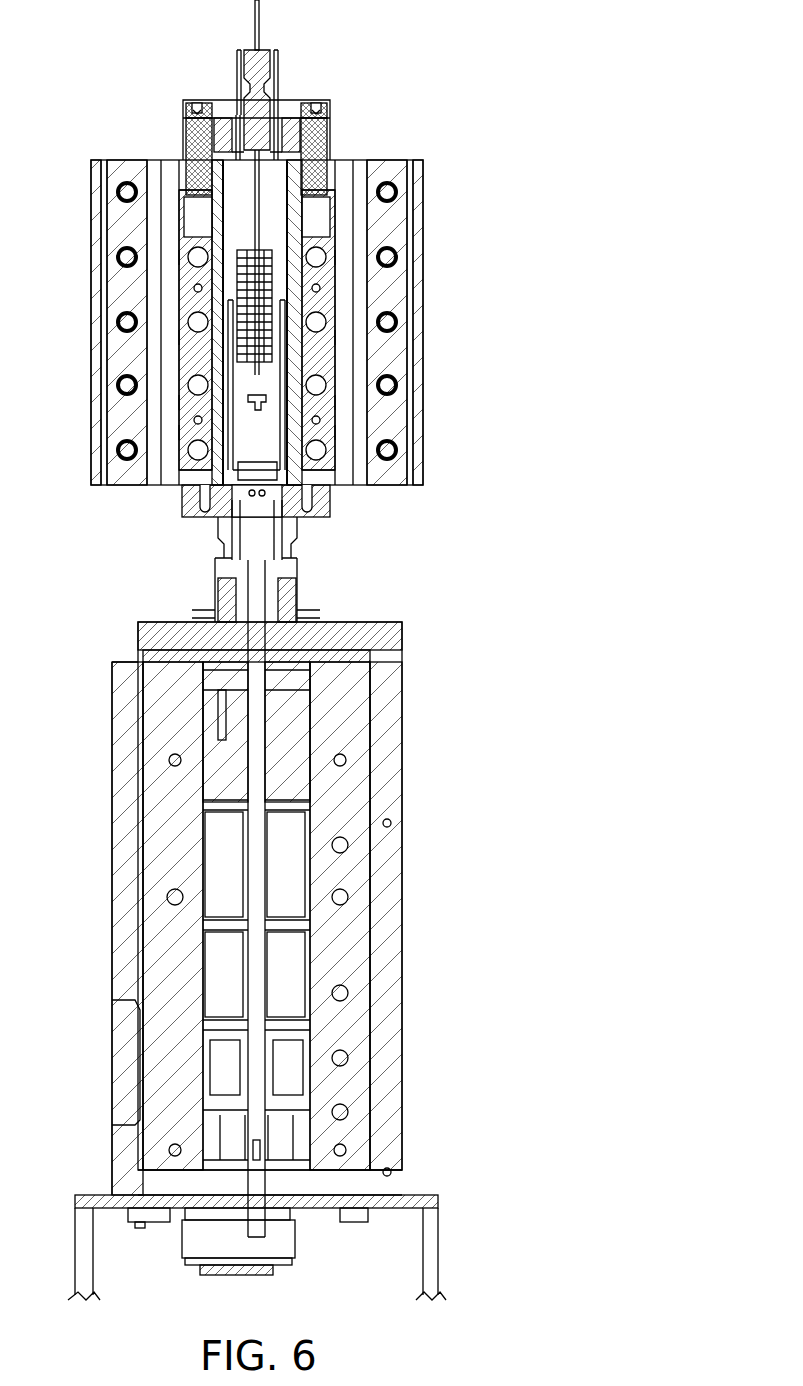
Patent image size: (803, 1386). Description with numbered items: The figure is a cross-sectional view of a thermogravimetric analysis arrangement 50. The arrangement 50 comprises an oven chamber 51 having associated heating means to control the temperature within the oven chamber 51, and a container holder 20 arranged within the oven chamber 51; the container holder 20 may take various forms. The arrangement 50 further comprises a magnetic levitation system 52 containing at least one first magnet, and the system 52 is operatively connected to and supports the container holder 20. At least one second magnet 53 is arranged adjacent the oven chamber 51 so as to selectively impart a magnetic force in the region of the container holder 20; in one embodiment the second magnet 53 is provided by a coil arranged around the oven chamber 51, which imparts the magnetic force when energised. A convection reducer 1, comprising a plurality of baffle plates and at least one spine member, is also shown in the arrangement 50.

The thermogravimetric analysis arrangement 50 is at (349, 650).
The convection reducer 1 is at (228, 292).
The second magnet 53 is at (322, 217).
The oven chamber 51 is at (243, 385).
The container holder 20 is at (243, 422).
The magnetic levitation system 52 is at (392, 880).